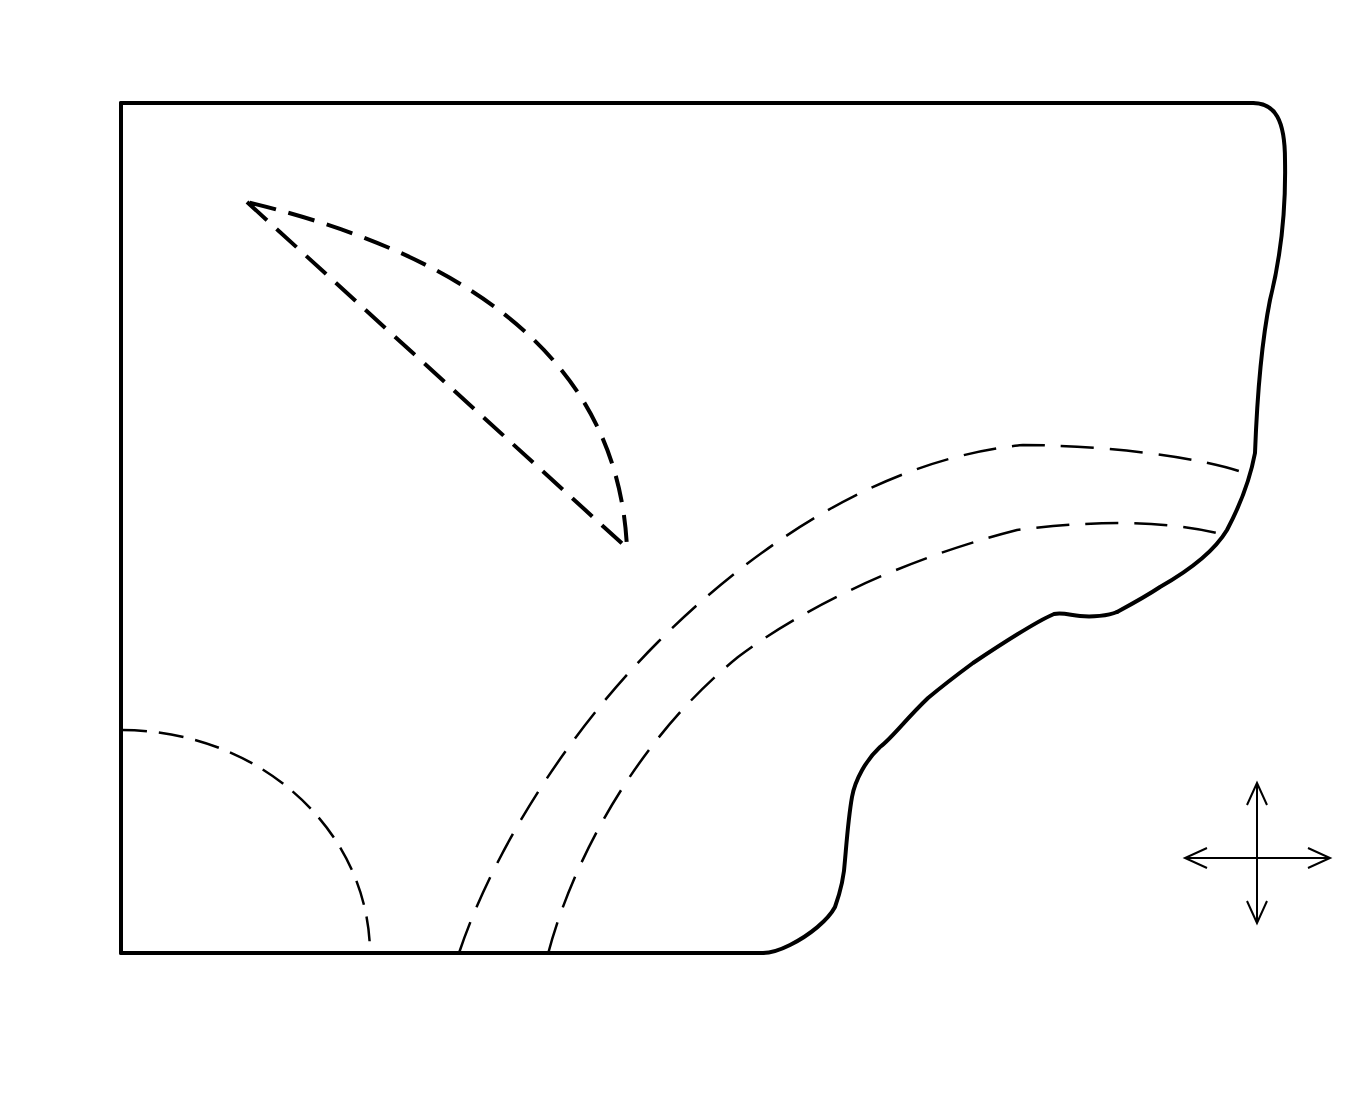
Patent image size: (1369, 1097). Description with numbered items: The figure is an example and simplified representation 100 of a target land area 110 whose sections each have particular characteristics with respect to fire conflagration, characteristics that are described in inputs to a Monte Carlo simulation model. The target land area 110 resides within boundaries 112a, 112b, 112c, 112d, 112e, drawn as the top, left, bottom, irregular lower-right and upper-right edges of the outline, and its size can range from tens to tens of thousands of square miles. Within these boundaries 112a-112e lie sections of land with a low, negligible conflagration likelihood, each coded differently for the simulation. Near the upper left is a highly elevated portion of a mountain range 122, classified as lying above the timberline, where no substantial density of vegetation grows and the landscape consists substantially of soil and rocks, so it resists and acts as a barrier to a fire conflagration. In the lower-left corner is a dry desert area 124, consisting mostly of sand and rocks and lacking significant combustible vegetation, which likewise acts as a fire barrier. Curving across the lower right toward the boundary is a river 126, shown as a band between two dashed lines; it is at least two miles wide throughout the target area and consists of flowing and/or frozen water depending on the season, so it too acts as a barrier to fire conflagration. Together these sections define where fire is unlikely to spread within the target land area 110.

The simplified representation 100 is at (156, 69).
The target land area 110 is at (703, 528).
The boundary 112a is at (673, 108).
The boundary 112b is at (126, 333).
The boundary 112c is at (727, 948).
The boundary 112d is at (927, 697).
The boundary 112e is at (1267, 264).
The highly elevated portion of a mountain range 122 is at (500, 359).
The dry desert area 124 is at (255, 882).
The river 126 is at (913, 541).